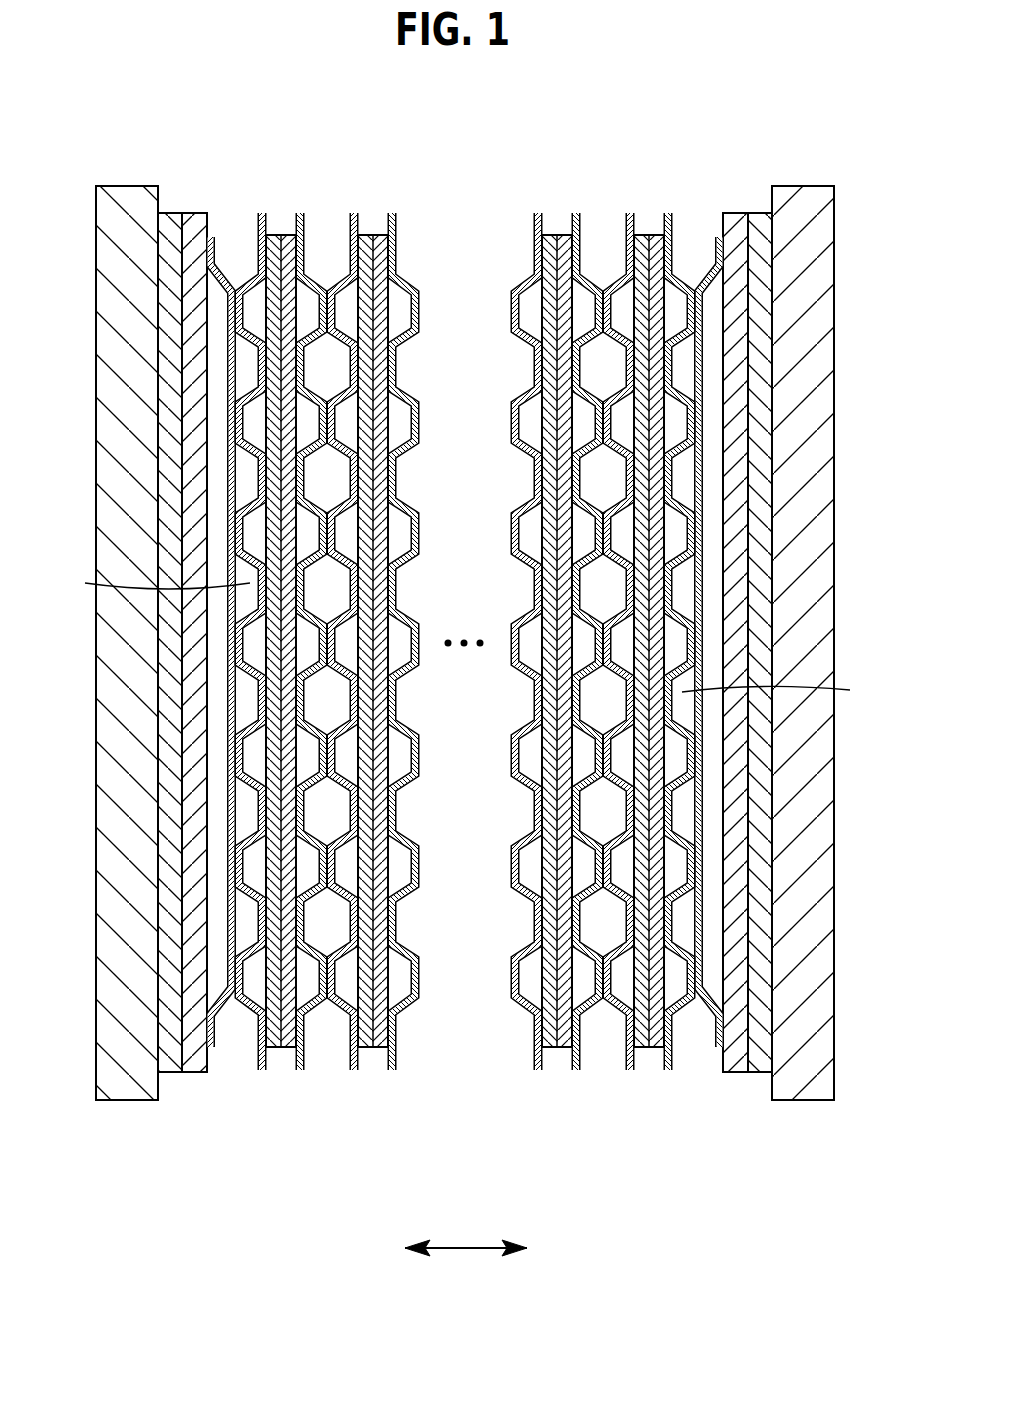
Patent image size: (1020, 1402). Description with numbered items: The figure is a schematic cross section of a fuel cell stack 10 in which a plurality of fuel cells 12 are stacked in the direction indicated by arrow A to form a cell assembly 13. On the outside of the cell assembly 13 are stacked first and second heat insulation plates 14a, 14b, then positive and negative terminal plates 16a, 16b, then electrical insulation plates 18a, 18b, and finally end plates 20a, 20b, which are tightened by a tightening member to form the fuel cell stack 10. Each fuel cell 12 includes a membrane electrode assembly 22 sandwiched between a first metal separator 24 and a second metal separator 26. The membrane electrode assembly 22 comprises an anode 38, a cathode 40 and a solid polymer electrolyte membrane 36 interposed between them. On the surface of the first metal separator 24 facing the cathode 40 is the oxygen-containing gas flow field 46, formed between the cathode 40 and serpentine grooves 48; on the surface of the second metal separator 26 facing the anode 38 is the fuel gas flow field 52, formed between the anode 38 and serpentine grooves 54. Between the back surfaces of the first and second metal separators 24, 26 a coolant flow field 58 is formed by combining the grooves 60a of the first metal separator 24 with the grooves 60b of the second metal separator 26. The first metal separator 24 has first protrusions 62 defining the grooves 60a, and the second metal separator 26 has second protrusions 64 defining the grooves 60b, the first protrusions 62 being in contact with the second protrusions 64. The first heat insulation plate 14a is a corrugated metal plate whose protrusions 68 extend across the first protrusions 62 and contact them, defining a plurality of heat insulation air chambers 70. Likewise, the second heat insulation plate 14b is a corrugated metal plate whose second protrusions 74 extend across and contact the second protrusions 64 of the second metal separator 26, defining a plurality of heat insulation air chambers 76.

The fuel cell stack 10 is at (696, 48).
The fuel cell 12 is at (440, 654).
The cell assembly 13 is at (625, 110).
The first heat insulation plate 14a is at (707, 258).
The second heat insulation plate 14b is at (222, 258).
The positive terminal plate 16a is at (737, 218).
The negative terminal plate 16b is at (193, 218).
The electrical insulation plate 18a is at (756, 217).
The electrical insulation plate 18b is at (170, 212).
The end plate 20a is at (812, 205).
The end plate 20b is at (120, 205).
The membrane electrode assembly 22 is at (377, 1062).
The first metal separator 24 is at (397, 1078).
The second metal separator 26 is at (352, 1077).
The solid polymer electrolyte membrane 36 is at (396, 594).
The anode 38 is at (394, 688).
The cathode 40 is at (402, 559).
The oxygen-containing gas flow field 46 is at (394, 974).
The serpentine grooves 48 is at (396, 858).
The fuel gas flow field 52 is at (462, 654).
The serpentine grooves 54 is at (378, 752).
The coolant flow field 58 is at (398, 346).
The grooves (flow field) of the first metal separator 60a is at (396, 466).
The grooves (flow field) of the second metal separator 60b is at (394, 489).
The first protrusions 62 is at (392, 316).
The second protrusions 64 is at (390, 414).
The protrusions of the first heat insulation plate 68 is at (700, 478).
The heat insulation air chambers 70 is at (702, 375).
The second protrusions of the second heat insulation plate 74 is at (240, 478).
The heat insulation air chambers 76 is at (246, 368).